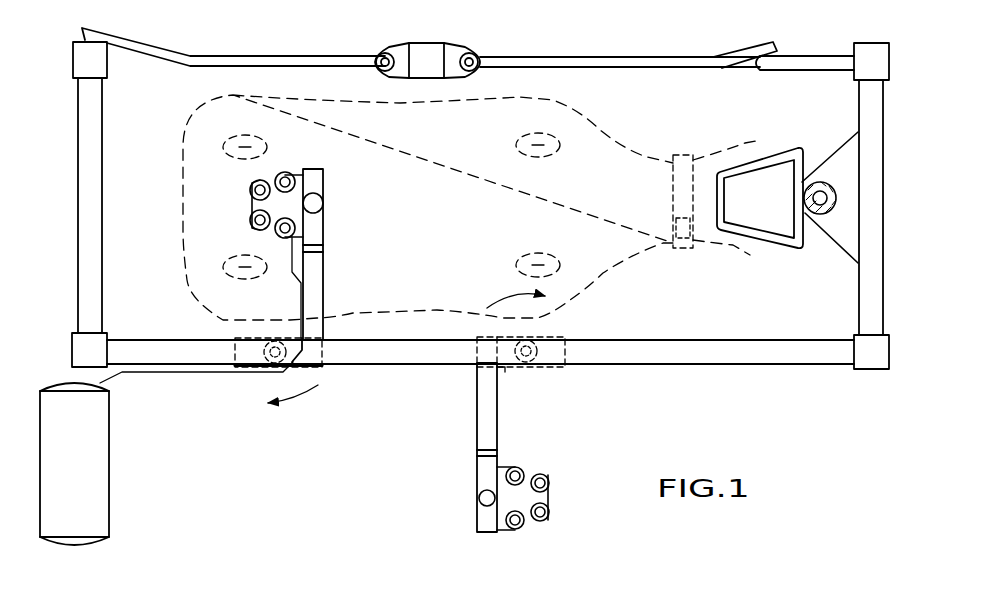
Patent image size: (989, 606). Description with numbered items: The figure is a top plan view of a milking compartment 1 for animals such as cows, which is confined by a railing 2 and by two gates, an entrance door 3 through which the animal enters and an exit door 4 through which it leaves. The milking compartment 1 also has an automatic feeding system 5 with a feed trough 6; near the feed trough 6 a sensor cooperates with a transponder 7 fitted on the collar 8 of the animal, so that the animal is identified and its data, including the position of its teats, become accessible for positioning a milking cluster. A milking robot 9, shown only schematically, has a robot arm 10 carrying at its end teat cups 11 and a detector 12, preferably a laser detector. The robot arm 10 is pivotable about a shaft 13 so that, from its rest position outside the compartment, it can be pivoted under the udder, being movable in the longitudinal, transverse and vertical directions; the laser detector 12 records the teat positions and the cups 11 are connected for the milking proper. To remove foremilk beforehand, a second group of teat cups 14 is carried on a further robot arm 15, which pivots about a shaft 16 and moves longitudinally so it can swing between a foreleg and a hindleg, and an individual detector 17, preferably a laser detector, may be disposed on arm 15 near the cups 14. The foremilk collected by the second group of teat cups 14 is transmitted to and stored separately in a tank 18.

The milking compartment 1 is at (720, 310).
The railing 2 is at (870, 295).
The entrance door 3 is at (258, 57).
The exit door 4 is at (604, 57).
The automatic feeding system 5 is at (833, 240).
The feed trough 6 is at (774, 165).
The transponder 7 is at (676, 228).
The collar 8 is at (672, 190).
The milking robot 9 is at (549, 445).
The robot arm 10 is at (455, 522).
The teat cups 11 is at (545, 528).
The detector 12 is at (483, 502).
The shaft 13 is at (527, 365).
The second group of teat cups 14 is at (250, 205).
The further robot arm 15 is at (344, 193).
The shaft 16 is at (353, 293).
The individual detector 17 is at (318, 195).
The tank 18 is at (93, 440).